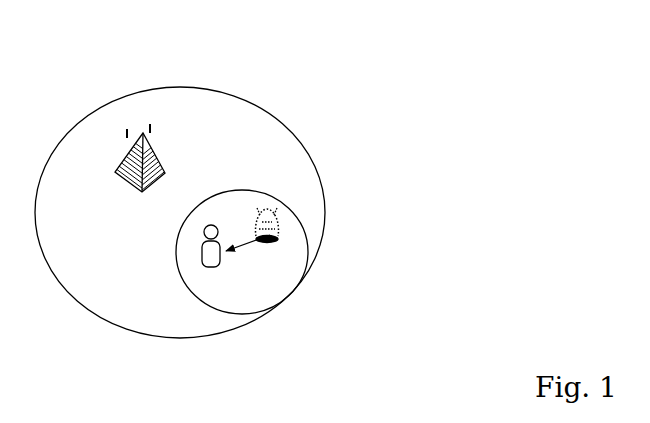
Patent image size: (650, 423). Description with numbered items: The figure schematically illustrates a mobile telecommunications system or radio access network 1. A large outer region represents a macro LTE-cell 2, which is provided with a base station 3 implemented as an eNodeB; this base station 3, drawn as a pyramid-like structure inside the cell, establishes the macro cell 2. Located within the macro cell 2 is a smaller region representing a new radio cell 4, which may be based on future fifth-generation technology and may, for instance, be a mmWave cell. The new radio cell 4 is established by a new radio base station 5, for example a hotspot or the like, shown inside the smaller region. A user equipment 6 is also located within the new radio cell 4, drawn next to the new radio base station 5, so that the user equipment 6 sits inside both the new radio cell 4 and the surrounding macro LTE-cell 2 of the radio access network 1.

The mobile telecommunications system 1 is at (428, 74).
The macro LTE-cell 2 is at (257, 100).
The base station 3 is at (190, 201).
The new radio cell 4 is at (305, 228).
The new radio base station 5 is at (270, 242).
The user equipment 6 is at (207, 268).